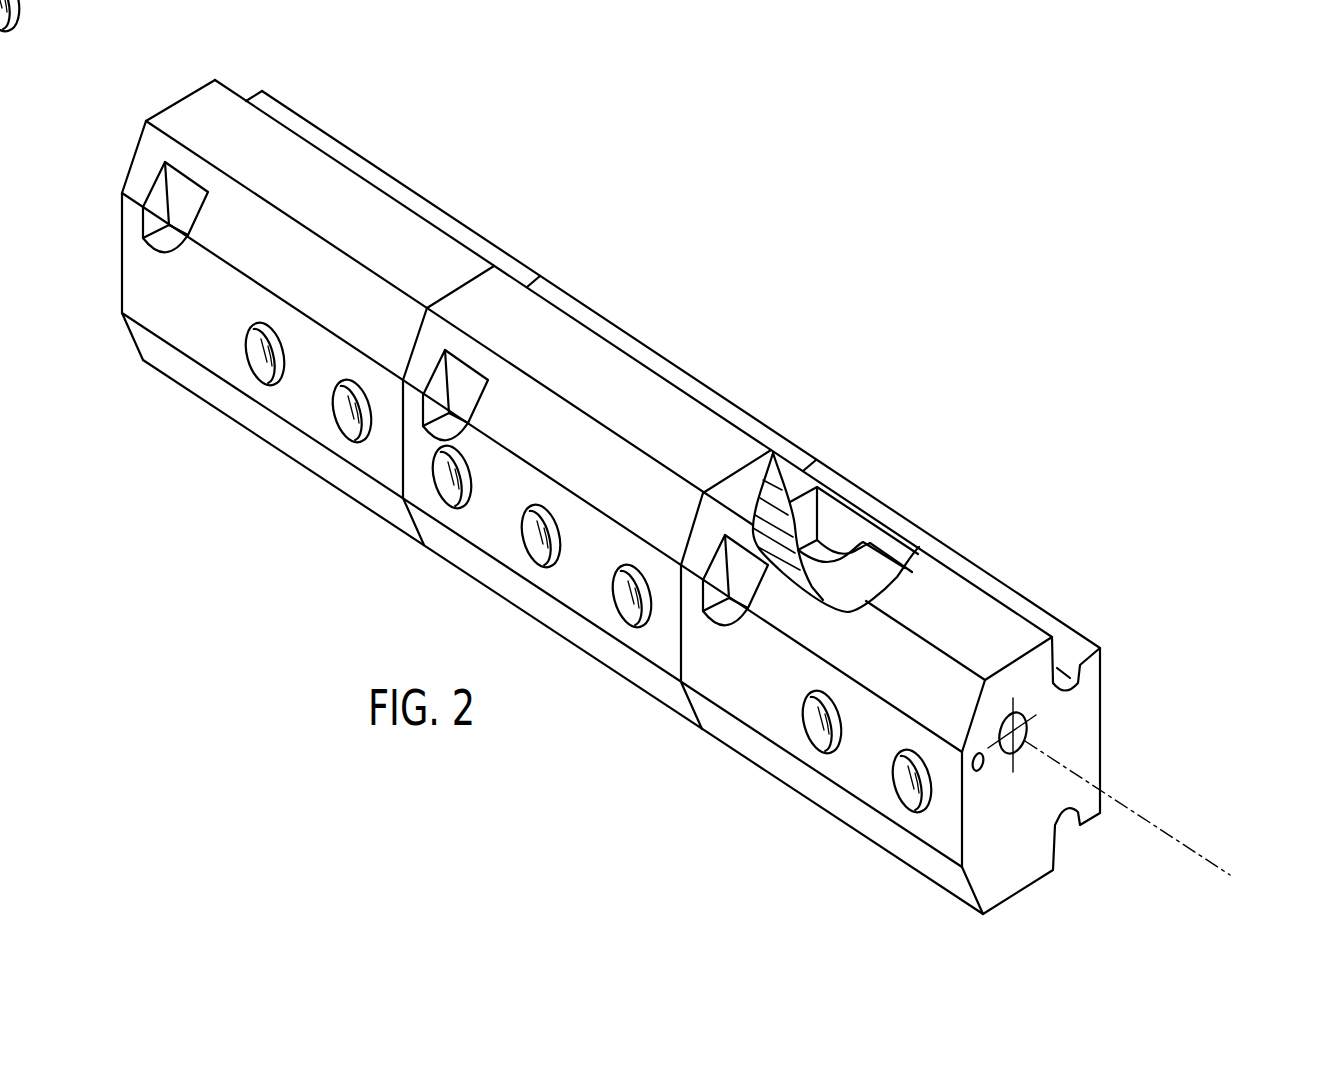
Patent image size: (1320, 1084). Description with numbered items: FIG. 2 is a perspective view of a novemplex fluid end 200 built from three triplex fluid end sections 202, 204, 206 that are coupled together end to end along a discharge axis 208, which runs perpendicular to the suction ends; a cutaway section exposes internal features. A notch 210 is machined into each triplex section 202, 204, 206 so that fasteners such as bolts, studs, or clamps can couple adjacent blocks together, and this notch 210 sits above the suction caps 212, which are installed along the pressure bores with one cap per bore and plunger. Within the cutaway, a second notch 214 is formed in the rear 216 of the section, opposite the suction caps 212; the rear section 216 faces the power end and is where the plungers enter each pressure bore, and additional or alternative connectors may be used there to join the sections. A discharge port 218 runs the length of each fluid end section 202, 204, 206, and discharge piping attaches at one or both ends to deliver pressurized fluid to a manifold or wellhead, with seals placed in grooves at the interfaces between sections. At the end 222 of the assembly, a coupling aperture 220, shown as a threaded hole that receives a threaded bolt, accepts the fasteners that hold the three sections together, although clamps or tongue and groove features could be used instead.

The novemplex fluid end 200 is at (892, 315).
The first triplex fluid end section 202 is at (355, 192).
The second triplex fluid end section 204 is at (525, 318).
The third triplex fluid end section 206 is at (1010, 622).
The discharge axis 208 is at (1180, 843).
The notch 210 is at (463, 393).
The suction caps 212 is at (343, 433).
The second notch 214 is at (840, 530).
The rear section 216 is at (838, 472).
The discharge port 218 is at (1032, 720).
The coupling aperture 220 is at (984, 771).
The end 222 is at (1085, 753).